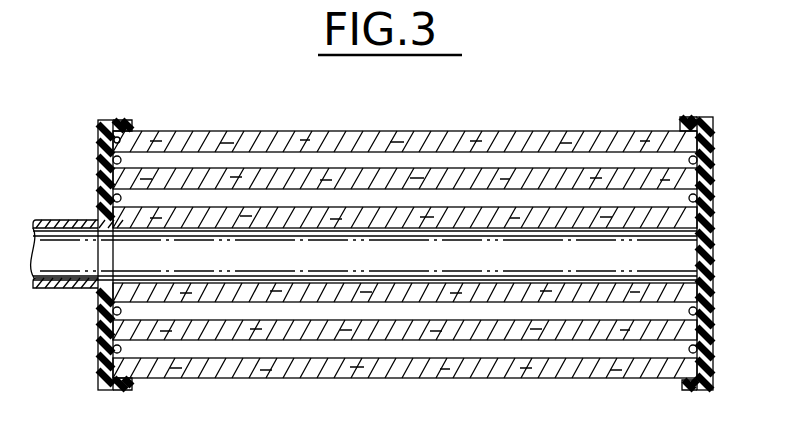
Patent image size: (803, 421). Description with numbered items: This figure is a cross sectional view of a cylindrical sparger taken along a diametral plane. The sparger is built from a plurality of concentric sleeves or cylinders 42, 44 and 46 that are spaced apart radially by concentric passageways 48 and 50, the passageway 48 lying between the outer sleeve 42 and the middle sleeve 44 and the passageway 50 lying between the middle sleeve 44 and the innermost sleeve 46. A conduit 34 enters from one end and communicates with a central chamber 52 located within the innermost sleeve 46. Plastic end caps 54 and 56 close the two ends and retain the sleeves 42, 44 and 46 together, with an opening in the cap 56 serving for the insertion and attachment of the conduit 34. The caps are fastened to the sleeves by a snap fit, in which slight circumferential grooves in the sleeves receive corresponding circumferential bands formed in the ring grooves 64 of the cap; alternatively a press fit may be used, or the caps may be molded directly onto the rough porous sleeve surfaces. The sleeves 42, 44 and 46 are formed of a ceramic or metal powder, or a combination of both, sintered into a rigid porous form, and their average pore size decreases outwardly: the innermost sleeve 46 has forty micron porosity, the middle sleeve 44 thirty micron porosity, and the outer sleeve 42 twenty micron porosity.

The conduit 34 is at (63, 220).
The sleeve 42 is at (460, 142).
The middle sleeve 44 is at (620, 180).
The innermost sleeve 46 is at (503, 222).
The concentric passageway 48 is at (563, 158).
The concentric passageway 50 is at (607, 200).
The central chamber 52 is at (323, 267).
The end cap 54 is at (717, 308).
The end cap 56 is at (100, 347).
The ring grooves 64 is at (103, 197).